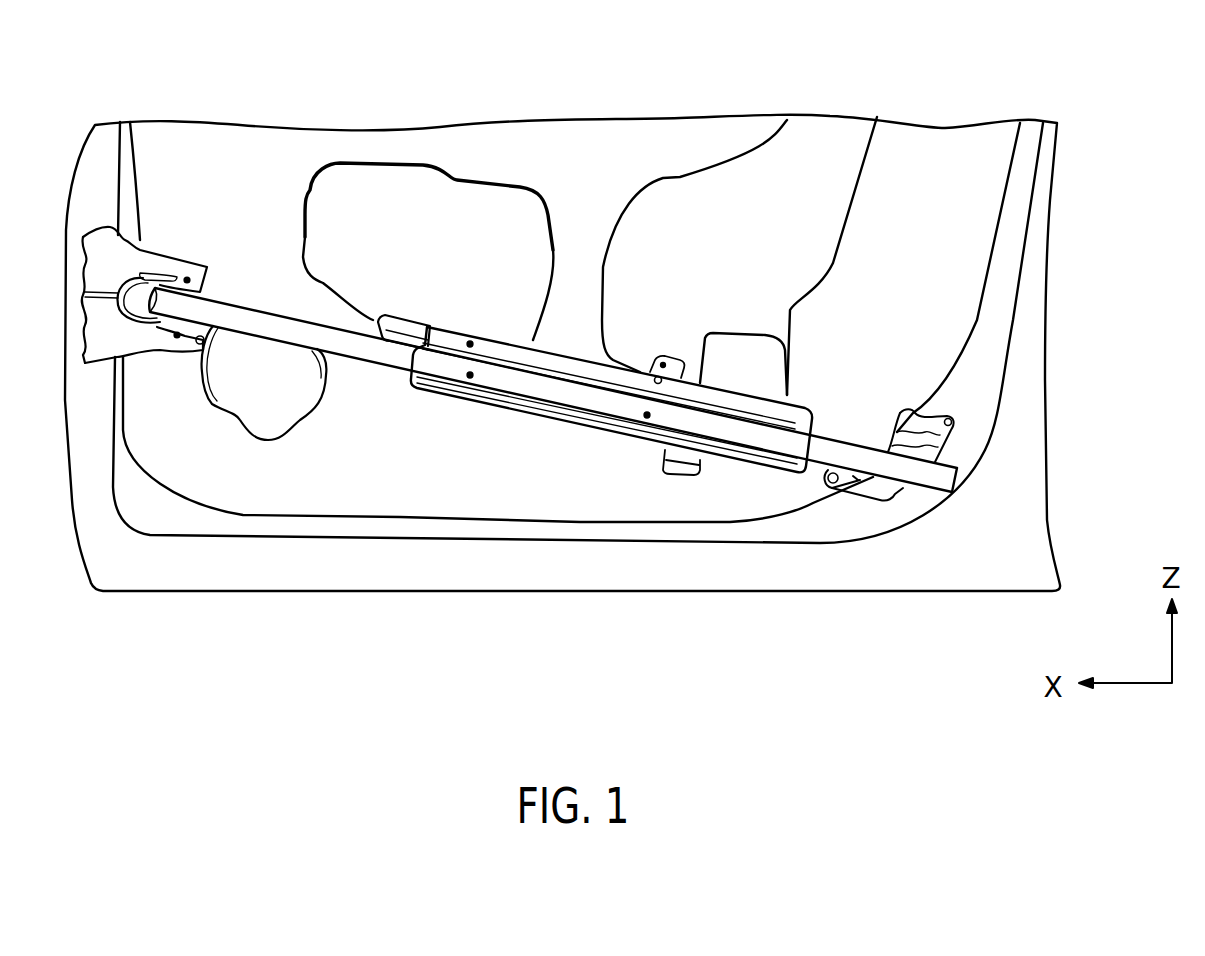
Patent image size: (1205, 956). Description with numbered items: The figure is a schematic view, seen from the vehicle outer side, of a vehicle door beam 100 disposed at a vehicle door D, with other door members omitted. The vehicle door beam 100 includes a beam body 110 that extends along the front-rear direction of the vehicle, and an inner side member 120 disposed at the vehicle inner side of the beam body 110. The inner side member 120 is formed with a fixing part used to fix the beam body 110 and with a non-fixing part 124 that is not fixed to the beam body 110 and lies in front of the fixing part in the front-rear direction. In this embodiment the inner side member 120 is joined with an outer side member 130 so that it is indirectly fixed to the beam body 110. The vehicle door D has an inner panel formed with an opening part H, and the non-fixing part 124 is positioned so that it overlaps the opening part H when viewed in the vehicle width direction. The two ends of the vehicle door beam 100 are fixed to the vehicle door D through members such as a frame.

The vehicle door beam 100 is at (519, 359).
The beam body 110 is at (935, 477).
The inner side member 120 is at (553, 268).
The non-fixing part 124 is at (412, 328).
The outer side member 130 is at (600, 423).
The opening part H is at (345, 229).
The vehicle door D is at (943, 207).